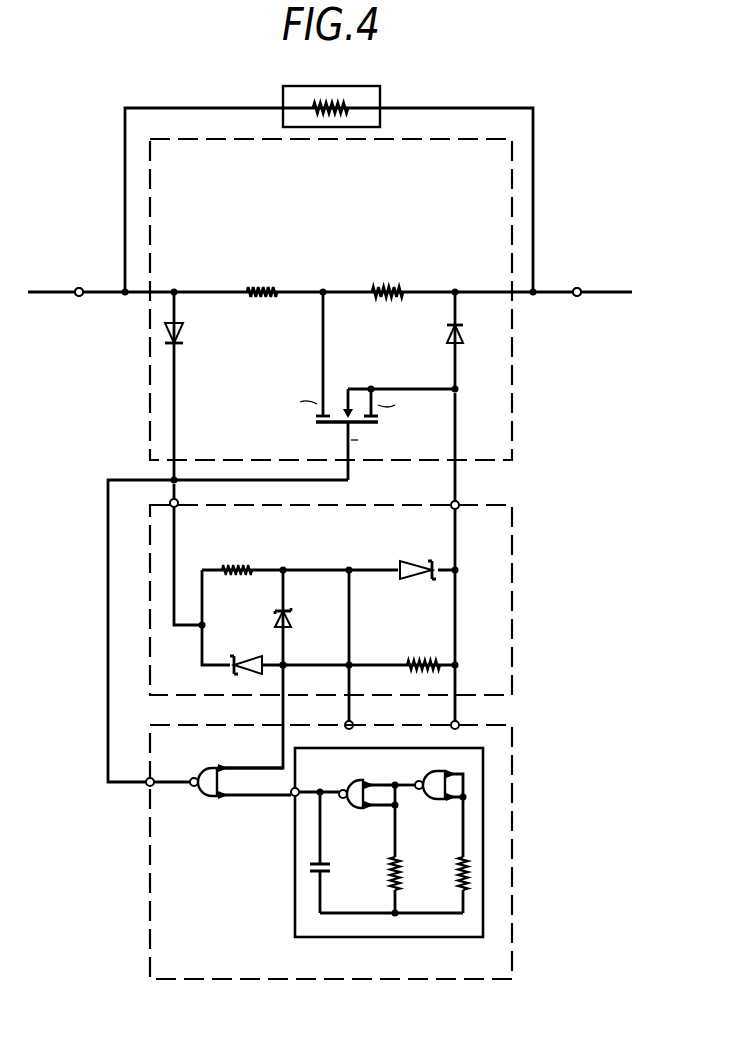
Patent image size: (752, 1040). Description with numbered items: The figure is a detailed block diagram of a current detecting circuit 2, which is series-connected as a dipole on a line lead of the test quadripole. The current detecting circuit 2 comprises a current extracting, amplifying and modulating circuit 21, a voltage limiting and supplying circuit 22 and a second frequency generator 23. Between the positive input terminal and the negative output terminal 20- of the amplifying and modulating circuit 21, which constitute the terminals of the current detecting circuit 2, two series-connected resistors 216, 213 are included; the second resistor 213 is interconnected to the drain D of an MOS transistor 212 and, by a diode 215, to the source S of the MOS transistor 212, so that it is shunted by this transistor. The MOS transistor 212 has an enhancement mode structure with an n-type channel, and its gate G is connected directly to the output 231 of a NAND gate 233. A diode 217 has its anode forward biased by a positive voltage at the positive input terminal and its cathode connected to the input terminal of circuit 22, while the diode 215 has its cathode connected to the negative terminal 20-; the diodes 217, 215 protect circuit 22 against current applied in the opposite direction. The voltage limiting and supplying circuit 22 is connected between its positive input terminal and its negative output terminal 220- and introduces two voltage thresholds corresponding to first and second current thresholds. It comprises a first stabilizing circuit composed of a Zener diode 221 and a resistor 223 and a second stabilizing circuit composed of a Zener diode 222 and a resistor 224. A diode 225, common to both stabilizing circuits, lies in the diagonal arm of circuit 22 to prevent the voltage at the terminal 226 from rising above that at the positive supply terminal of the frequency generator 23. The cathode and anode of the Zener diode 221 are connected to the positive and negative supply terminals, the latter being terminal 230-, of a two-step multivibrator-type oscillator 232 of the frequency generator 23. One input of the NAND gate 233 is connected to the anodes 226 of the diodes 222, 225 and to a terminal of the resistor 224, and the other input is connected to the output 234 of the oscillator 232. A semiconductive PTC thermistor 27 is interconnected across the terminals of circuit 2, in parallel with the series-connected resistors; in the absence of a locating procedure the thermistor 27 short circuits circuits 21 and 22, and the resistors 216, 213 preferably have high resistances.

The current detecting circuit 2 is at (548, 670).
The negative output terminal 20- is at (577, 288).
The current extracting, amplifying and modulating circuit 21 is at (512, 380).
The voltage limiting and supplying circuit 22 is at (512, 593).
The second frequency generator 23 is at (512, 848).
The semiconductive thermistor 27 is at (380, 96).
The MOS transistor 212 is at (342, 431).
The second resistor 213 is at (387, 287).
The diode 215 is at (446, 335).
The resistor 216 is at (260, 287).
The diode 217 is at (184, 331).
The negative output terminal 220- is at (458, 504).
The Zener diode 221 is at (403, 588).
The Zener diode 222 is at (246, 659).
The resistor 223 is at (246, 573).
The resistor 224 is at (423, 661).
The diode 225 is at (292, 620).
The terminal 226 is at (287, 670).
The negative supply terminal 230- is at (459, 724).
The output of NAND gate 231 is at (148, 788).
The two-step multivibrator-type oscillator 232 is at (294, 875).
The NAND gate 233 is at (210, 768).
The output of the oscillator 234 is at (293, 798).